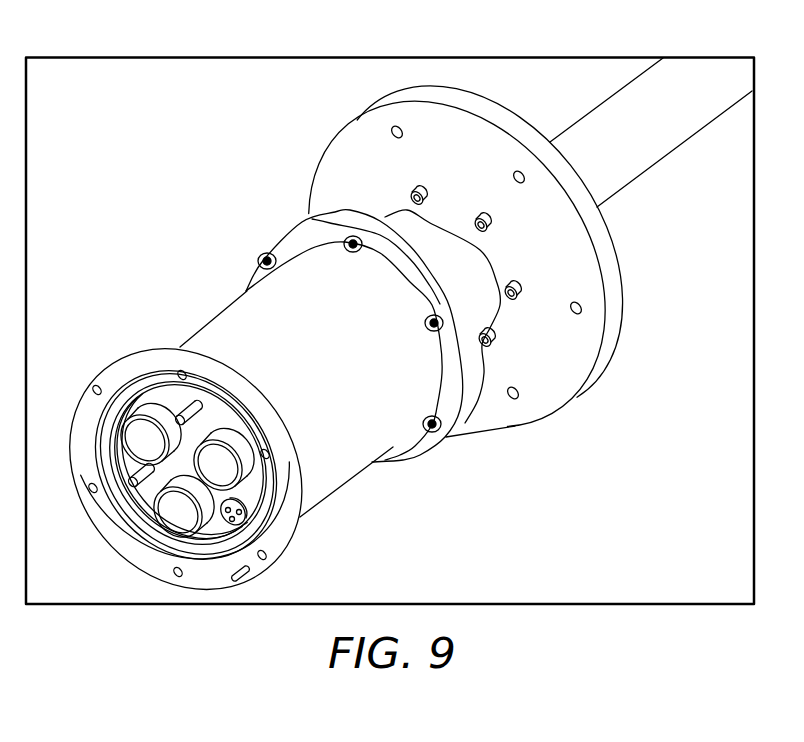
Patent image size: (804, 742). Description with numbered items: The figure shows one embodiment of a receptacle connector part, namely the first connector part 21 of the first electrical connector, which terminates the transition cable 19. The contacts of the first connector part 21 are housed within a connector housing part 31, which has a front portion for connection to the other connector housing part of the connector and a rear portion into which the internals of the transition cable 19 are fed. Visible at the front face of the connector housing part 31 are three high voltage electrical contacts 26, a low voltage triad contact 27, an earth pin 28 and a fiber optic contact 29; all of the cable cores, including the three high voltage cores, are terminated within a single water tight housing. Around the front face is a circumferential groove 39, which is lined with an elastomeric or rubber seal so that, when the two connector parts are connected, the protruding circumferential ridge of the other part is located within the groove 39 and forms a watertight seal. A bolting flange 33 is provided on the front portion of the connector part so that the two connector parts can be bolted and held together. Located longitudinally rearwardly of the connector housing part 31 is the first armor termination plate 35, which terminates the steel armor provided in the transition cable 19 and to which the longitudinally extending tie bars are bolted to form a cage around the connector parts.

The transition cable 19 is at (658, 148).
The first connector part 21 is at (338, 463).
The high voltage electrical contacts 26 is at (127, 417).
The low voltage triad contact 27 is at (247, 512).
The earth pin 28 is at (125, 478).
The fiber optic contact 29 is at (168, 374).
The connector housing part 31 is at (203, 337).
The bolting flange 33 is at (120, 369).
The first armor termination plate 35 is at (563, 393).
The circumferential groove 39 is at (133, 541).